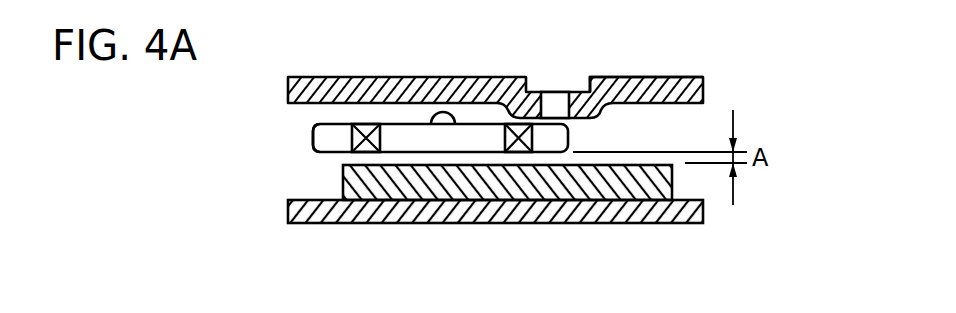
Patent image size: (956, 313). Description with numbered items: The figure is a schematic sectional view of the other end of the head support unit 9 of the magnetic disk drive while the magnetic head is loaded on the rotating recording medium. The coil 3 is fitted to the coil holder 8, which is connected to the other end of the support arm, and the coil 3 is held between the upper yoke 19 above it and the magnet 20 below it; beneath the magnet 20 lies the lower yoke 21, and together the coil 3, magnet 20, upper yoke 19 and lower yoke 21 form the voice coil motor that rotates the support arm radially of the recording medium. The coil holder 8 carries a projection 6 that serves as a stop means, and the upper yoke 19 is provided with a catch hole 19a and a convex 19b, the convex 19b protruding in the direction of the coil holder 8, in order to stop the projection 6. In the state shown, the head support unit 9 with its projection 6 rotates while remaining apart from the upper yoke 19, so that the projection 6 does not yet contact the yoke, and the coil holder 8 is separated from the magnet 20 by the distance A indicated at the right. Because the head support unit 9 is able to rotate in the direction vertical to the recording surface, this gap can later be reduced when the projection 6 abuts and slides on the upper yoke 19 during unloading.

The coil 3 is at (364, 128).
The projection 6 is at (443, 113).
The coil holder 8 is at (323, 142).
The head support unit 9 is at (379, 108).
The upper yoke 19 is at (534, 59).
The catch hole 19a is at (557, 100).
The convex 19b is at (608, 76).
The magnet 20 is at (512, 187).
The lower yoke 21 is at (588, 223).